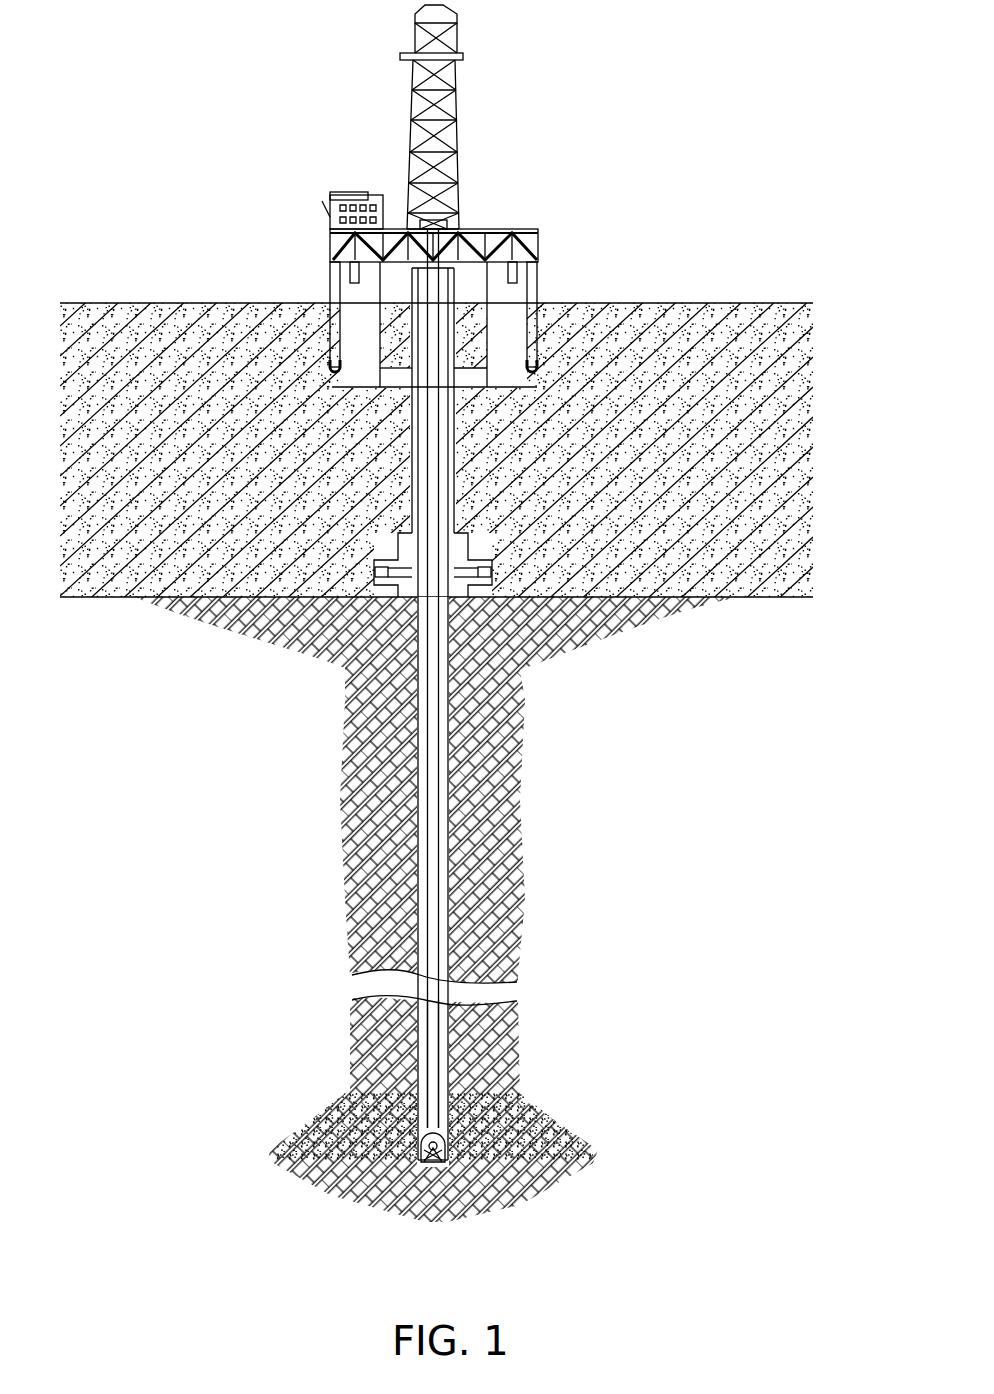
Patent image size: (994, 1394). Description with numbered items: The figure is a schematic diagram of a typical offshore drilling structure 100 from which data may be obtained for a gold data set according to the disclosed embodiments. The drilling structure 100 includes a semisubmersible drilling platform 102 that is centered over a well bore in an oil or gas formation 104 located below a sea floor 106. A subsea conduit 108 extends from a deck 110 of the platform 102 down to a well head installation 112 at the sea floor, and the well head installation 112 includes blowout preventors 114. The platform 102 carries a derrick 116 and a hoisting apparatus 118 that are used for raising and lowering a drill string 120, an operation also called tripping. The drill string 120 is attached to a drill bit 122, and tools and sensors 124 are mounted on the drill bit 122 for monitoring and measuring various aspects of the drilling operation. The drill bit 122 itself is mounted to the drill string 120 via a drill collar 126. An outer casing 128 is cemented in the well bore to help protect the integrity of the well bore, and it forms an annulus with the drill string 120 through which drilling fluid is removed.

The drilling structure 100 is at (566, 84).
The semisubmersible drilling platform 102 is at (537, 230).
The oil or gas formation 104 is at (517, 1118).
The sea floor 106 is at (733, 597).
The subsea conduit 108 is at (453, 463).
The deck 110 is at (536, 276).
The well head installation 112 is at (457, 532).
The blowout preventors 114 is at (492, 573).
The derrick 116 is at (456, 43).
The hoisting apparatus 118 is at (434, 214).
The drill string 120 is at (440, 436).
The drill bit 122 is at (438, 1163).
The tools and sensors 124 is at (425, 1163).
The drill collar 126 is at (440, 1082).
The outer casing 128 is at (440, 880).